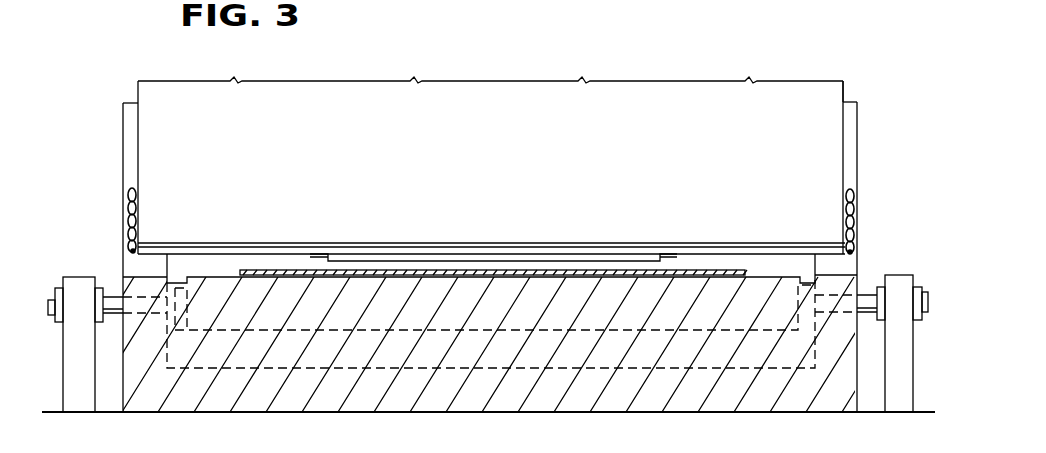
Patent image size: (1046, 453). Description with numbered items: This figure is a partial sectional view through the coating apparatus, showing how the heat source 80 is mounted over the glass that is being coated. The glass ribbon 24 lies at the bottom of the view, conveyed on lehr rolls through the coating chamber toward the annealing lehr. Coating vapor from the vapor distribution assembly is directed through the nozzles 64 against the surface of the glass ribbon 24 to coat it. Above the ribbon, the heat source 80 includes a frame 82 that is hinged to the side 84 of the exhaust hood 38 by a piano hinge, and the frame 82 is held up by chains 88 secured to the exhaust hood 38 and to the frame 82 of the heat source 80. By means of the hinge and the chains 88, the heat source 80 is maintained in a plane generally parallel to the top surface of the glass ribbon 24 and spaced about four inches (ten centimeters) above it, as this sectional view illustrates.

The glass ribbon 24 is at (234, 269).
The exhaust hood 38 is at (846, 91).
The nozzles 64 is at (677, 260).
The heat source 80 is at (751, 217).
The frame 82 is at (140, 259).
The side of the exhaust hood 84 is at (772, 92).
The chains 88 is at (127, 208).